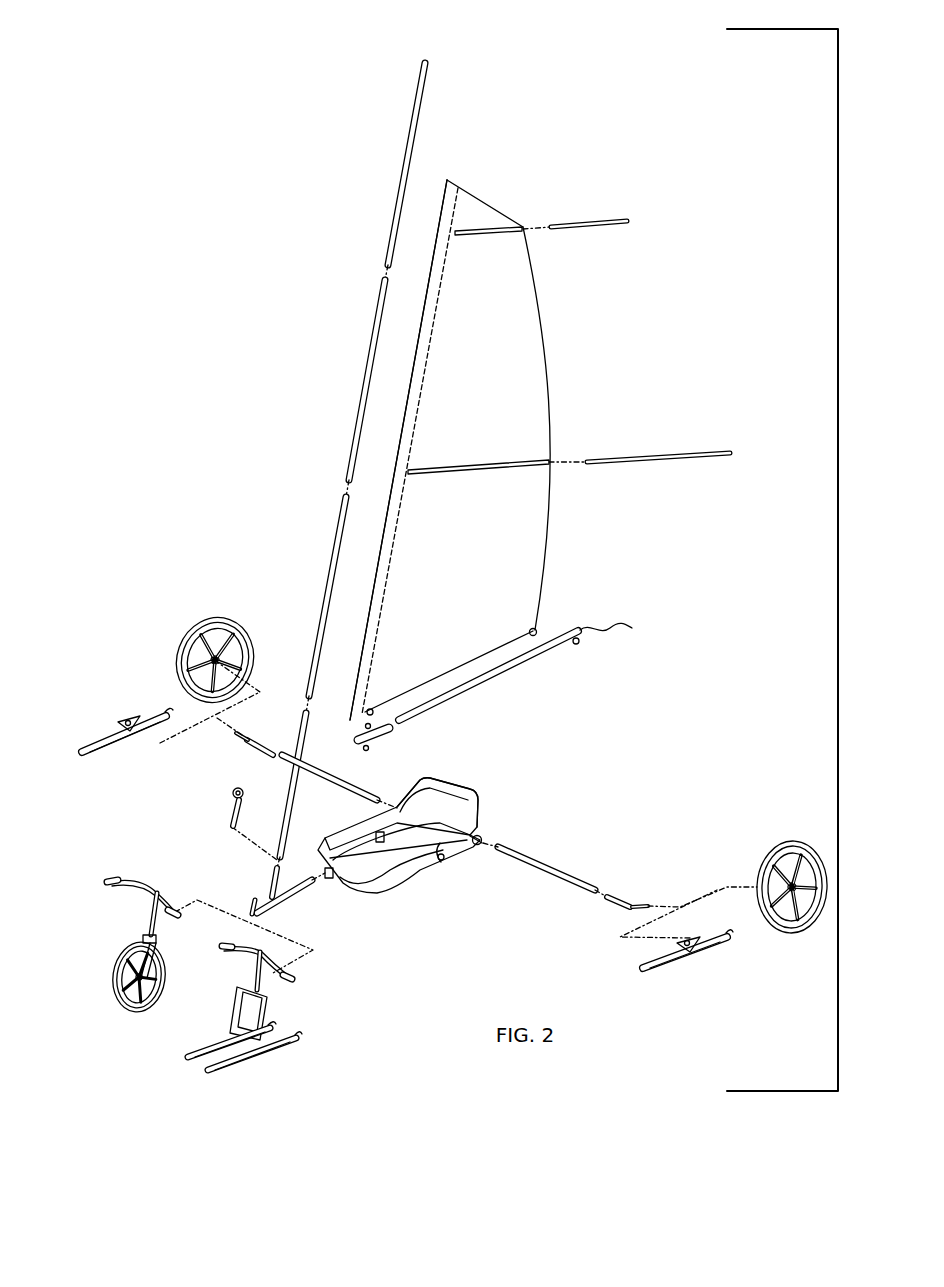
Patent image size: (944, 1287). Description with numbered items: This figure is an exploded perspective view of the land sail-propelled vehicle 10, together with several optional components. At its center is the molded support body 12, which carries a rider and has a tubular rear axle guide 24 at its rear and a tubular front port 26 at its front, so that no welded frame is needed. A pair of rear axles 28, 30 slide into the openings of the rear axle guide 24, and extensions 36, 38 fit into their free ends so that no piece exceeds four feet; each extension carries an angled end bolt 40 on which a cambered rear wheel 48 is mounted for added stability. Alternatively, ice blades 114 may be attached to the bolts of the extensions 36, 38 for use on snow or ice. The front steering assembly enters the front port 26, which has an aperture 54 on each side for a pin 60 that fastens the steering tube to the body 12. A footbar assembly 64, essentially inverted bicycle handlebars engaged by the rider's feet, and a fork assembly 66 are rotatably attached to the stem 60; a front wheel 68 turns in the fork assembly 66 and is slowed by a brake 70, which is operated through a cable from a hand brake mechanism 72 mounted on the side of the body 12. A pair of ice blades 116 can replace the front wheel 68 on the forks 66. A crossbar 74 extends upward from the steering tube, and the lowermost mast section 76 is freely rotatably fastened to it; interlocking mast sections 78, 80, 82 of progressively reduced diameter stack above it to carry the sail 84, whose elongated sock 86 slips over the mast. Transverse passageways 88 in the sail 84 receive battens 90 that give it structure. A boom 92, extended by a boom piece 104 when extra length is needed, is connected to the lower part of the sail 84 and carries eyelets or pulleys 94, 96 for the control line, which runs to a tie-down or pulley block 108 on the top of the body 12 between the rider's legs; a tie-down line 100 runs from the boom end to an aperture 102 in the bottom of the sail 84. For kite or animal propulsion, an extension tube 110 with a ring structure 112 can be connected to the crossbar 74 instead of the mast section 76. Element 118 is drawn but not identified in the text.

The vehicle 10 is at (807, 560).
The molded support body 12 is at (420, 884).
The rear axle guide 24 is at (503, 822).
The front port 26 is at (360, 909).
The rear axle 28 is at (332, 777).
The rear axle 30 is at (547, 864).
The extension 36 is at (237, 761).
The extension 38 is at (644, 881).
The axle end bolt 40 is at (436, 820).
The rear wheel 48 is at (484, 765).
The port aperture 54 is at (300, 902).
The pin / stem 60 is at (230, 895).
The footbar assembly 64 is at (132, 887).
The fork assembly 66 is at (238, 987).
The front wheel 68 is at (118, 987).
The brake 70 is at (119, 929).
The hand brake mechanism 72 is at (468, 867).
The crossbar 74 is at (243, 873).
The lower mast section 76 is at (308, 785).
The mast section 78 is at (301, 596).
The mast section 80 is at (335, 380).
The upper mast section 82 is at (375, 164).
The sail 84 is at (550, 371).
The sock 86 is at (390, 446).
The passageway 88 is at (505, 342).
The batten 90 is at (640, 318).
The boom 92 is at (488, 675).
The eyelet or pulley 94 is at (606, 659).
The eyelet or pulley 96 is at (394, 747).
The tie-down line 100 is at (636, 611).
The sail aperture 102 is at (491, 646).
The boom extension piece 104 is at (405, 692).
The tie-down or pulley block 108 is at (417, 887).
The extension tube 110 is at (198, 820).
The ring structure 112 is at (202, 801).
The ice blade 114 is at (400, 842).
The ice blade 116 is at (251, 1055).
The seat 118 is at (459, 786).